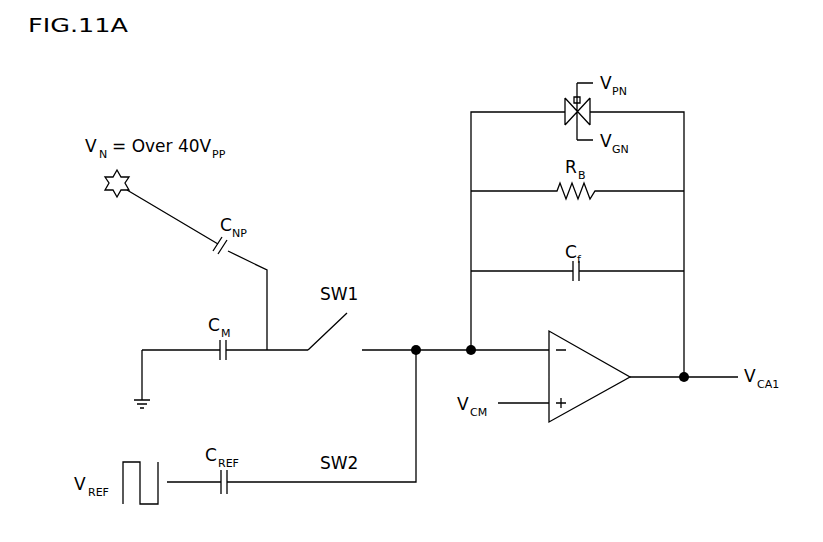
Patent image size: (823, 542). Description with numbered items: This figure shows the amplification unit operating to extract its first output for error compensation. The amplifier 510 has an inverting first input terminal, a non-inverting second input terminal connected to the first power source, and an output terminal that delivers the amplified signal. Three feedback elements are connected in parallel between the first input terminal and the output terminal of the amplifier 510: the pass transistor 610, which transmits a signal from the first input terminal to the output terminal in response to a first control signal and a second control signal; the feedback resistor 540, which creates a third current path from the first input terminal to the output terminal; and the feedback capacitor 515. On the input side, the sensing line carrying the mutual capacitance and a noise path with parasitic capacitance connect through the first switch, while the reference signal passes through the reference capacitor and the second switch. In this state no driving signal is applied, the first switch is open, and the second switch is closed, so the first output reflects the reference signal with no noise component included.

The pass transistor 610 is at (566, 104).
The feedback resistor 540 is at (558, 189).
The feedback capacitor 515 is at (583, 266).
The amplifier 510 is at (589, 355).